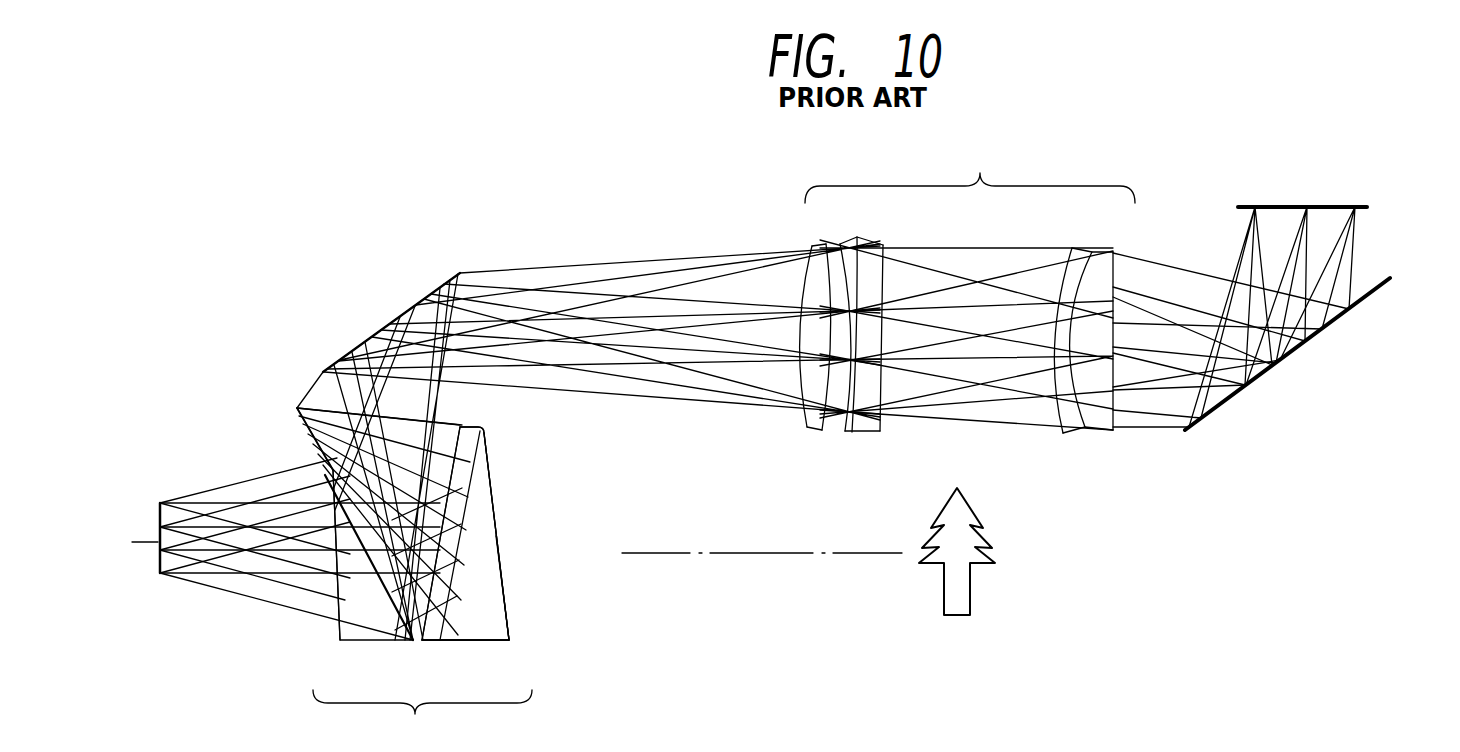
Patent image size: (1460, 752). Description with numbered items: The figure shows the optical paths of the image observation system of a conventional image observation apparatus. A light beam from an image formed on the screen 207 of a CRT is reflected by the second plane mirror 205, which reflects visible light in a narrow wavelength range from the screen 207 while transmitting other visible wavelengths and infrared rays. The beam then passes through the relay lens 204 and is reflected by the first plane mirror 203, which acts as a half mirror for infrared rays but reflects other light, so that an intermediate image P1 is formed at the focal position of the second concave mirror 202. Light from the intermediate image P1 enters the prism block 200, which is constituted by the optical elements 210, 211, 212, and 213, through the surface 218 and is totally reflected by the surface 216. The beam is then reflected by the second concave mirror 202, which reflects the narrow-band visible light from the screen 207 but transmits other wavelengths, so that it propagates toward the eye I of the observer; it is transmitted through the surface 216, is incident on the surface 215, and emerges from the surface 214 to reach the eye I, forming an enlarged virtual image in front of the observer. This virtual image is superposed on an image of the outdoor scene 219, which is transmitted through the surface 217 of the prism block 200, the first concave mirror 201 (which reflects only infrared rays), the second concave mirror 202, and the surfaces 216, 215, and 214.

The eye I is at (152, 575).
The intermediate image P1 is at (405, 358).
The prism block 200 is at (392, 750).
The first concave mirror 201 is at (480, 543).
The second concave mirror 202 is at (440, 623).
The first plane mirror 203 is at (420, 302).
The relay lens 204 is at (967, 288).
The second plane mirror 205 is at (1382, 295).
The screen 207 is at (1328, 205).
The optical element 210 is at (358, 617).
The optical element 211 is at (485, 430).
The optical element 212 is at (470, 467).
The optical element 213 is at (483, 508).
The surface 214 is at (290, 593).
The surface 215 is at (327, 517).
The surface 216 is at (300, 420).
The surface 217 is at (473, 576).
The surface 218 is at (443, 417).
The outdoor scene 219 is at (970, 595).